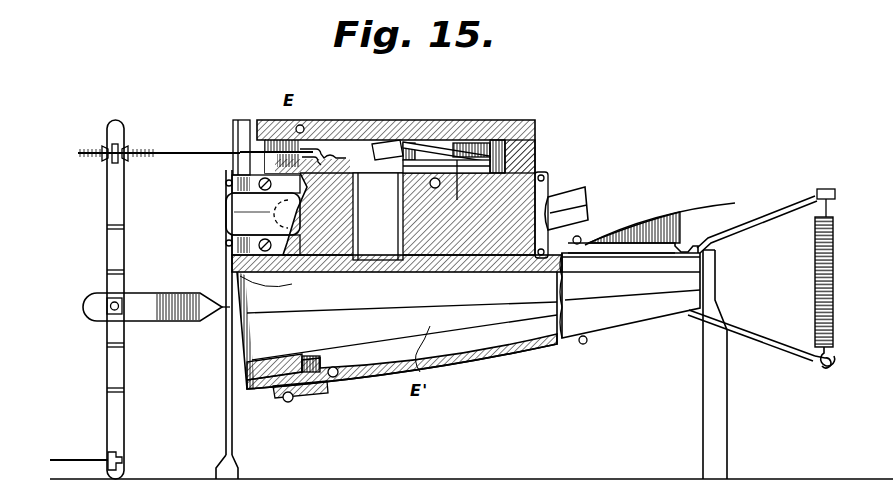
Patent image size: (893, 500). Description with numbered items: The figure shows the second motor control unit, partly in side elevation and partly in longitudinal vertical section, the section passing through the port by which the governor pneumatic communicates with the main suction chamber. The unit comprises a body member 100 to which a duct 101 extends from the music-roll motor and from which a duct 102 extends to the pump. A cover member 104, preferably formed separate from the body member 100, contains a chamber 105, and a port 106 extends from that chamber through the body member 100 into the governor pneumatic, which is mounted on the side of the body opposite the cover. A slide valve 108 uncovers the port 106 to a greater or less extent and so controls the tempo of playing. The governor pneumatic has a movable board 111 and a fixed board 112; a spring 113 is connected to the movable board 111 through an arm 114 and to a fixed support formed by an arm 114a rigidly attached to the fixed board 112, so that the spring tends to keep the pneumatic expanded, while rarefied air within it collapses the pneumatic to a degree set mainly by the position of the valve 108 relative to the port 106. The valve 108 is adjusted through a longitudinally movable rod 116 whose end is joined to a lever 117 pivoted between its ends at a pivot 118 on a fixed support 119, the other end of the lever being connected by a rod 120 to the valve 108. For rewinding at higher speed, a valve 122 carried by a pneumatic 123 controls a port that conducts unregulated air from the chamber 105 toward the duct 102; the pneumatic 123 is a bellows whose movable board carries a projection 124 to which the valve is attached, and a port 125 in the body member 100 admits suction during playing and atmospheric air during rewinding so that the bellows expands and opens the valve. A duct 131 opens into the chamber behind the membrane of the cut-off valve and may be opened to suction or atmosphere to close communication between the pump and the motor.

The body member 100 is at (545, 178).
The duct 101 is at (290, 262).
The duct 102 is at (587, 203).
The cover member 104 is at (537, 139).
The chamber 105 is at (522, 140).
The port 106 is at (378, 262).
The slide valve 108 is at (340, 146).
The movable board 111 is at (333, 388).
The fixed board 112 is at (493, 273).
The spring 113 is at (815, 278).
The arm 114 is at (782, 350).
The arm 114a is at (757, 224).
The rod 116 is at (66, 459).
The lever 117 is at (118, 201).
The pivot 118 is at (124, 298).
The fixed support 119 is at (174, 322).
The rod 120 is at (188, 153).
The valve 122 is at (388, 148).
The pneumatic 123 is at (424, 165).
The projection 124 is at (457, 160).
The port 125 is at (496, 140).
The duct 131 is at (292, 120).